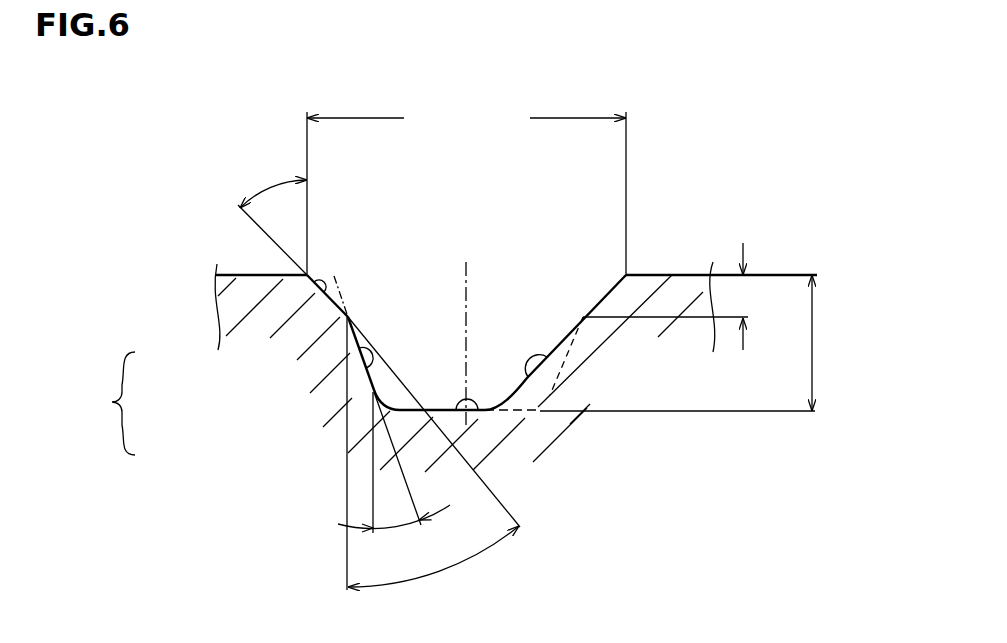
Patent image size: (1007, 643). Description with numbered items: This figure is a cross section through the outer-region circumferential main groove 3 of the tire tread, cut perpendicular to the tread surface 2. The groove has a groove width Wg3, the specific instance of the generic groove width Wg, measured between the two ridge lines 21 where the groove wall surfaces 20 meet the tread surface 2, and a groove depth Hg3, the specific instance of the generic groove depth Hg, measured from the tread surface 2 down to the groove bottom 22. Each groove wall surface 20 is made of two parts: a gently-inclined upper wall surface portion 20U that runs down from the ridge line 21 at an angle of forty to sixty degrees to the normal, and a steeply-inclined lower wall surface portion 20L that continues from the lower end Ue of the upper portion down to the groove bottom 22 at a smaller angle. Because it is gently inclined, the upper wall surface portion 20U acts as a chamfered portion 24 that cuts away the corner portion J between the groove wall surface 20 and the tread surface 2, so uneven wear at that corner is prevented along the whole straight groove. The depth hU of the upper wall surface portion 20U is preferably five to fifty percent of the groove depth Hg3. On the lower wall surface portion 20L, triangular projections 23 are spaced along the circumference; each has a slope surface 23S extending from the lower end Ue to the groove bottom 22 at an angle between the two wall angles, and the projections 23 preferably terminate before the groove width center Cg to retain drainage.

The tread surface 2 is at (261, 275).
The circumferential main groove 3 is at (468, 353).
The groove wall surface 20 is at (297, 381).
The upper wall surface portion 20U is at (240, 272).
The chamfered portion 24 is at (240, 272).
The lower wall surface portion 20L is at (326, 399).
The ridge line 21 is at (309, 273).
The groove bottom 22 is at (487, 410).
The slope surface 23S is at (378, 398).
The projection 23 is at (559, 326).
The corner portion J is at (341, 298).
The lower end of the upper wall surface portion Ue is at (351, 316).
The groove width center Cg is at (467, 268).
The groove width Wg3 is at (466, 189).
The groove width Wg is at (466, 189).
The groove depth Hg3 is at (808, 343).
The groove depth Hg is at (808, 343).
The depth of the upper wall surface portion hU is at (672, 296).